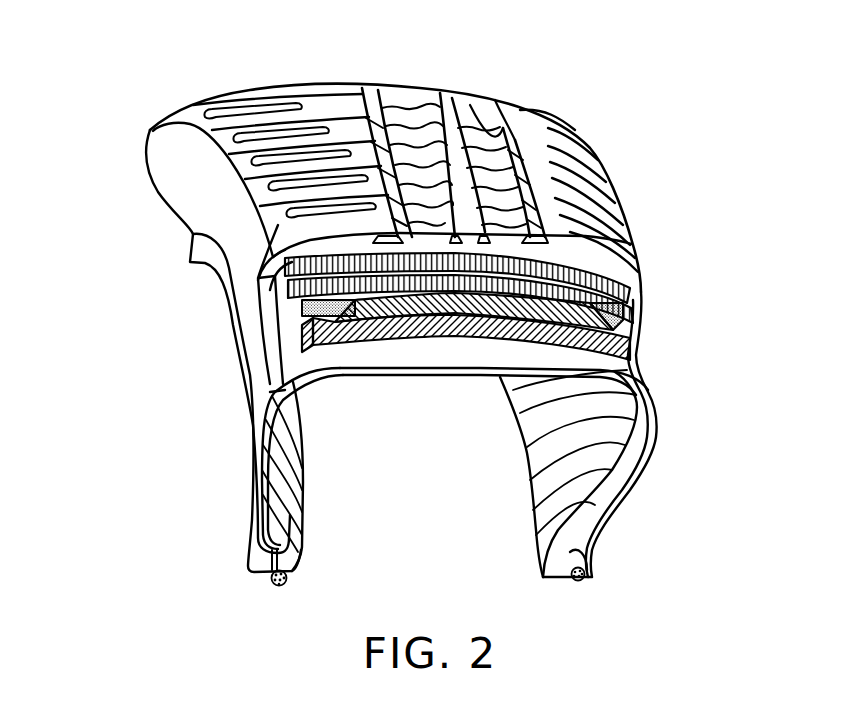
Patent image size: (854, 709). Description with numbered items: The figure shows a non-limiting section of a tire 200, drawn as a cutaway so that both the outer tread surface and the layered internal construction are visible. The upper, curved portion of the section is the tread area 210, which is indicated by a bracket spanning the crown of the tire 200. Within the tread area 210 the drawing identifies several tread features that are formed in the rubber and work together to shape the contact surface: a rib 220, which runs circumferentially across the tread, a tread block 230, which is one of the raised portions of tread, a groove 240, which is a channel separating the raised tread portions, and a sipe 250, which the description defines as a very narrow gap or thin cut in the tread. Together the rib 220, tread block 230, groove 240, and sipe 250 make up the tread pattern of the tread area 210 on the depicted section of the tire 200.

The tire 200 is at (205, 434).
The tread area 210 is at (177, 78).
The rib 220 is at (445, 157).
The tread block 230 is at (510, 104).
The groove 240 is at (520, 135).
The sipe 250 is at (578, 172).